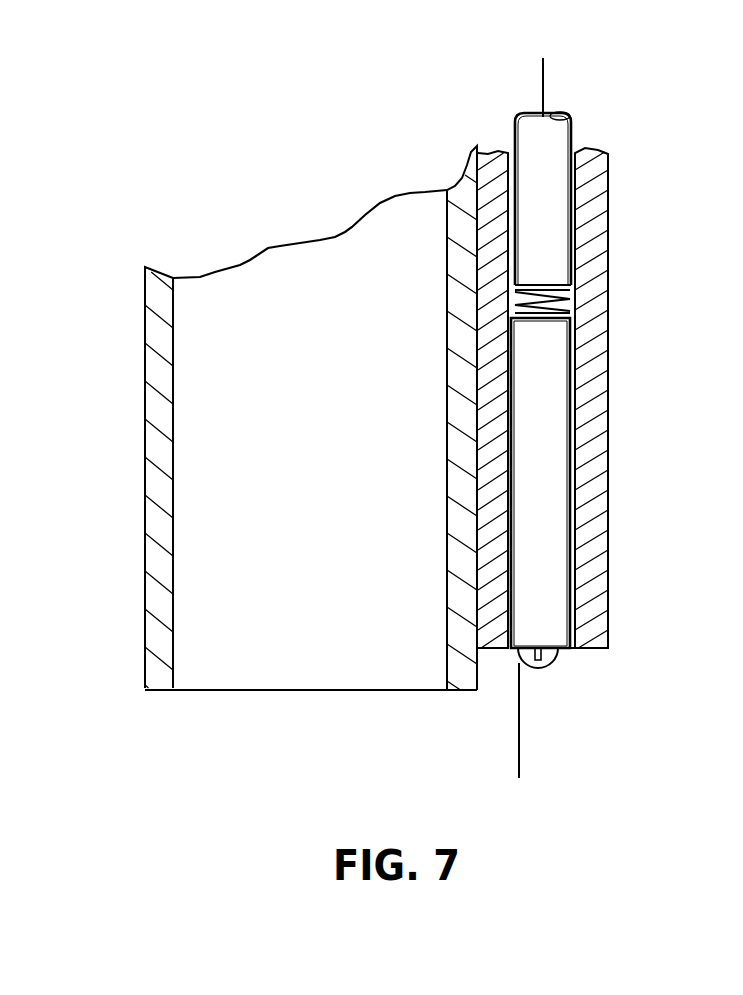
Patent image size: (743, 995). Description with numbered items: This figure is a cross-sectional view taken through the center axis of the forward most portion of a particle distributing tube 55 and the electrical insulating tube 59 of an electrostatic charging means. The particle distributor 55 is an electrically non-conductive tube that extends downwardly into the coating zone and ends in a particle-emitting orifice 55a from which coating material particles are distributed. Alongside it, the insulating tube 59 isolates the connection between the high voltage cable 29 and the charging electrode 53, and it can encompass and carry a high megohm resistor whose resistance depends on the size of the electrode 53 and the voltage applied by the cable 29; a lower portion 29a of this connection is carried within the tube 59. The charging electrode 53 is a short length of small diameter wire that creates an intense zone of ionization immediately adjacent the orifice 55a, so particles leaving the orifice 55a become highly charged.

The high voltage cable 29 is at (603, 176).
The electrode tube lower segment 29a is at (552, 418).
The electrical insulating tube 59 is at (608, 262).
The particle distributor 55 is at (145, 376).
The particle-emitting orifice 55a is at (203, 703).
The charging electrode 53 is at (519, 738).